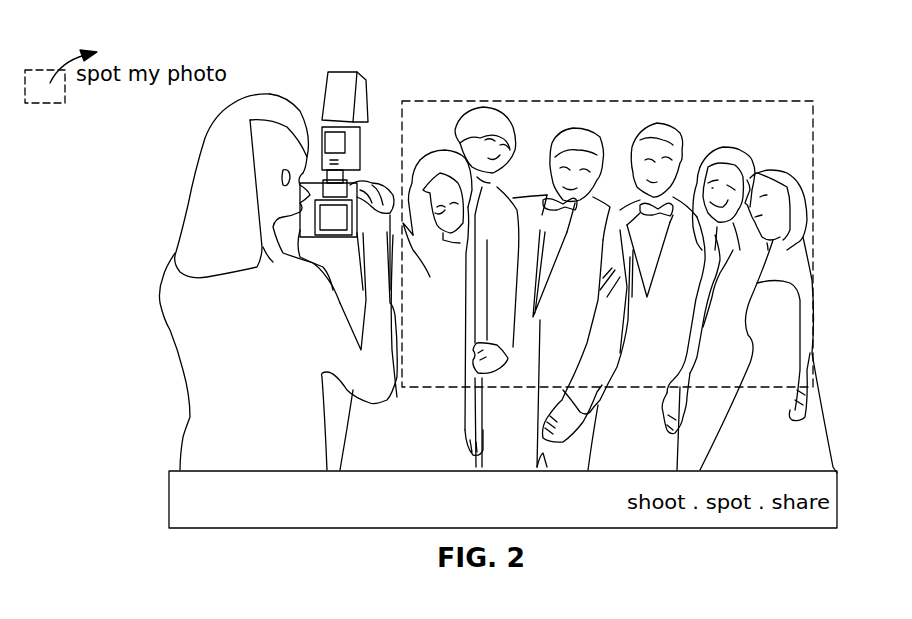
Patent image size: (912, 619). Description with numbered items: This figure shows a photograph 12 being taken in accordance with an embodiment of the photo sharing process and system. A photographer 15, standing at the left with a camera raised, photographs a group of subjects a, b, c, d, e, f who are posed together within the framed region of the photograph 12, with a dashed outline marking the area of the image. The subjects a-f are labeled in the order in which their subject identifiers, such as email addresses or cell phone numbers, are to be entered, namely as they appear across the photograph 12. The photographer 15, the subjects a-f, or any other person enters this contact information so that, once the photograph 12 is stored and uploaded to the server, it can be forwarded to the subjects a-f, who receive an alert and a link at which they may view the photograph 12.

The photograph 12 is at (813, 157).
The photographer 15 is at (273, 100).
The subject a is at (440, 152).
The subject b is at (478, 103).
The subject c is at (585, 128).
The subject d is at (660, 123).
The subject e is at (730, 147).
The subject f is at (783, 170).